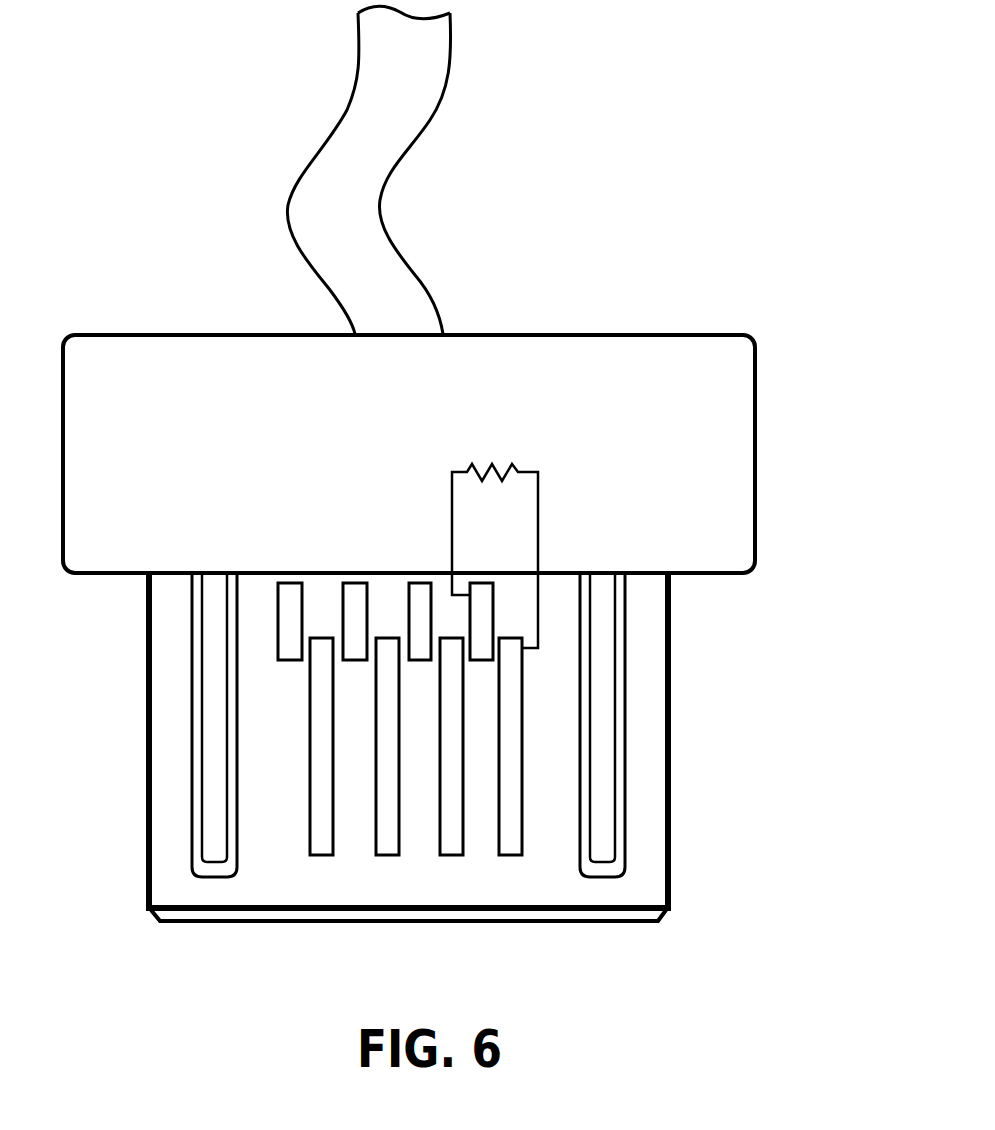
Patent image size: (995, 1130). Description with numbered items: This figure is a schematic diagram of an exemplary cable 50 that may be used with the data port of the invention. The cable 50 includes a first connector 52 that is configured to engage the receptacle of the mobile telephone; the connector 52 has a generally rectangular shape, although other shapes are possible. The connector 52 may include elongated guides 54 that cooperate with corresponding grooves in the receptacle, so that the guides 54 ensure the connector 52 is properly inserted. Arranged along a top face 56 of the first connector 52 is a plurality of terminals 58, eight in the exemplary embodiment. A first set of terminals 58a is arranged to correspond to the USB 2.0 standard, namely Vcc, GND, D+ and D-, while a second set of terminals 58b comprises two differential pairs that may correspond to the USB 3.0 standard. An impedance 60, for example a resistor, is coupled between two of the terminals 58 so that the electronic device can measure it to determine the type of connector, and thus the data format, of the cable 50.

The cable 50 is at (757, 203).
The first connector 52 is at (420, 760).
The elongated guides 54 is at (190, 790).
The top face 56 is at (247, 887).
The terminals 58 is at (465, 760).
The first set of terminals 58a is at (452, 890).
The second set of terminals 58b is at (358, 545).
The impedance 60 is at (545, 450).